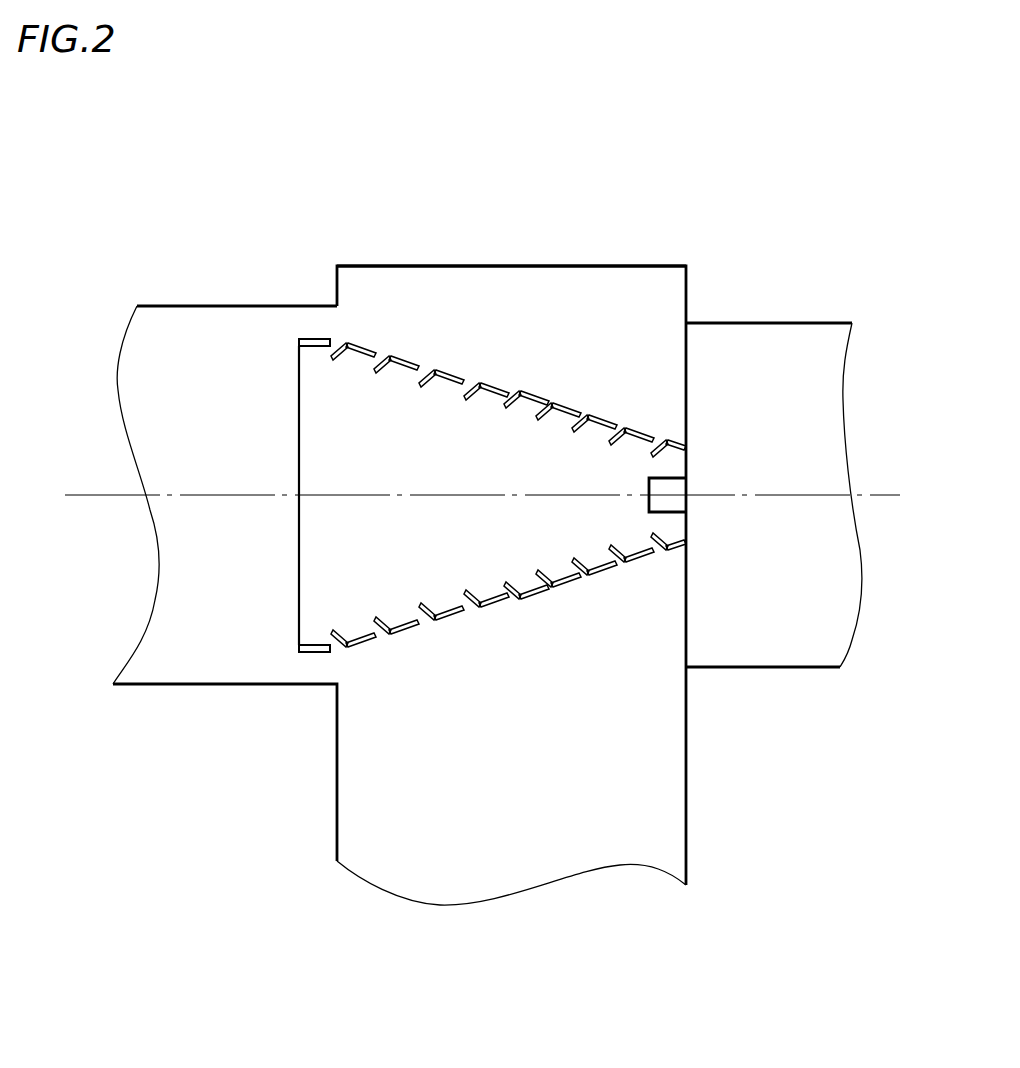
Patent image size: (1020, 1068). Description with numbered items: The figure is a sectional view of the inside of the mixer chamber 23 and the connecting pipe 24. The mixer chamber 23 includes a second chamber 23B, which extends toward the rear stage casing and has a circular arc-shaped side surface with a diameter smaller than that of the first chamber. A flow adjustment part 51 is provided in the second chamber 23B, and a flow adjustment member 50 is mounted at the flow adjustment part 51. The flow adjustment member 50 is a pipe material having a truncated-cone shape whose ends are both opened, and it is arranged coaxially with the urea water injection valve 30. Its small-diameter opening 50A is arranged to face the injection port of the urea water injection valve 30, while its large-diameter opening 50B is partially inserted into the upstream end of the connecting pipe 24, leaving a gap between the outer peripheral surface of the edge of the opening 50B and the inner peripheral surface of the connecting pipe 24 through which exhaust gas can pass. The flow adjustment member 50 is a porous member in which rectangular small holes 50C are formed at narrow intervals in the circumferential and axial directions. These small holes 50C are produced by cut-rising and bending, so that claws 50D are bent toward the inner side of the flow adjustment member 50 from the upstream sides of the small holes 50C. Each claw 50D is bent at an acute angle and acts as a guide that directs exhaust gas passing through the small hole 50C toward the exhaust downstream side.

The mixer chamber 23 is at (648, 258).
The second chamber 23B is at (582, 266).
The connecting pipe 24 is at (213, 684).
The urea water injection valve 30 is at (668, 477).
The flow adjustment member 50 is at (540, 457).
The small-diameter opening 50A is at (682, 530).
The large-diameter opening 50B is at (320, 352).
The small hole 50C is at (436, 372).
The claw 50D is at (520, 393).
The flow adjustment part 51 is at (309, 339).